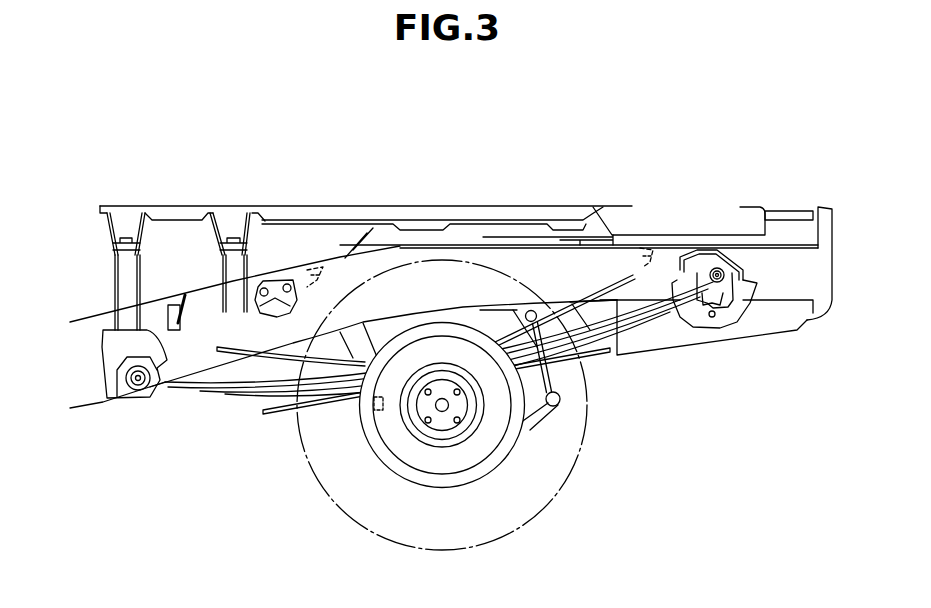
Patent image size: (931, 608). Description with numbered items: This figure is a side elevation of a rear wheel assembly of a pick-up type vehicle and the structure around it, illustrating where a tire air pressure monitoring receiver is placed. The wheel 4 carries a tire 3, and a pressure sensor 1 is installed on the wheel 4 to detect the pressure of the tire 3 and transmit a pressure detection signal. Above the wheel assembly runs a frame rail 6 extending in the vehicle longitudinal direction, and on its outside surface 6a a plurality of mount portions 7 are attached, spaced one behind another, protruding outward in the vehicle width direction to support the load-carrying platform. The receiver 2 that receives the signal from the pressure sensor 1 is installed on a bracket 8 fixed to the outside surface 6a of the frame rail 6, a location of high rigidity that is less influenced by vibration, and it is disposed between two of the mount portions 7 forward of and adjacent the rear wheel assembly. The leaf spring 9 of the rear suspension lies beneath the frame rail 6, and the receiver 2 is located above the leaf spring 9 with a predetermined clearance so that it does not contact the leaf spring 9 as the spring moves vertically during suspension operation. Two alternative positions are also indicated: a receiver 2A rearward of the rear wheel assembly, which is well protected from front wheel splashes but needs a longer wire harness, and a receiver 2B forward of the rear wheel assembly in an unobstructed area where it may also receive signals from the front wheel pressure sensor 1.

The pressure sensor 1 is at (376, 404).
The receiver 2 is at (185, 300).
The receiver 2A is at (653, 247).
The receiver 2B is at (307, 270).
The tire 3 is at (574, 473).
The wheel 4 is at (443, 486).
The frame rail 6 is at (483, 243).
The outside surface 6a is at (349, 291).
The mount portion 7 is at (113, 283).
The bracket 8 is at (186, 297).
The leaf spring 9 is at (255, 391).